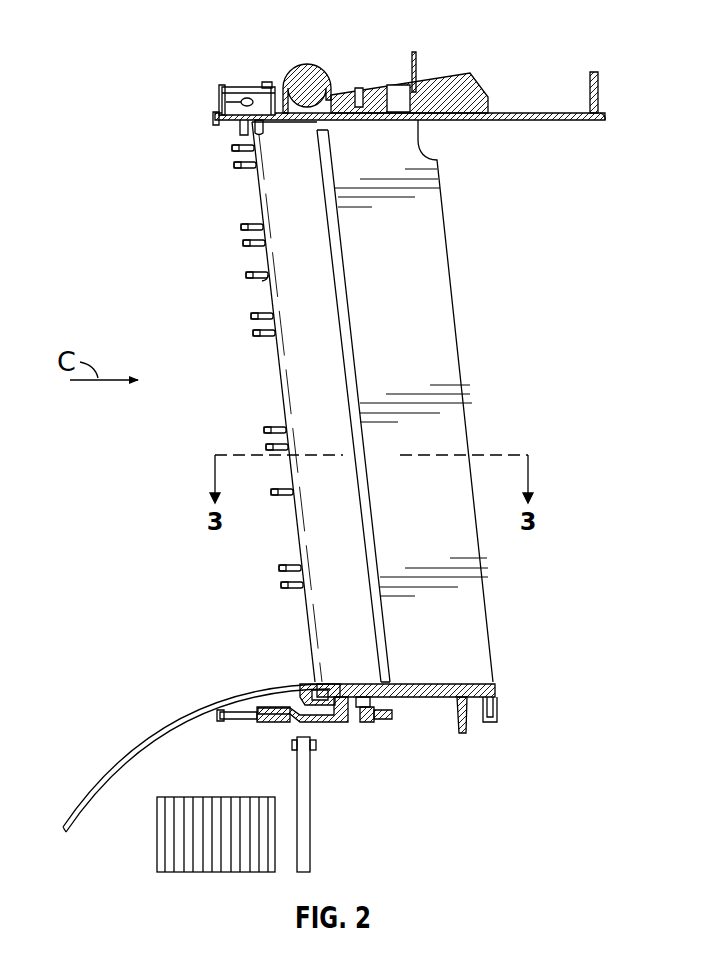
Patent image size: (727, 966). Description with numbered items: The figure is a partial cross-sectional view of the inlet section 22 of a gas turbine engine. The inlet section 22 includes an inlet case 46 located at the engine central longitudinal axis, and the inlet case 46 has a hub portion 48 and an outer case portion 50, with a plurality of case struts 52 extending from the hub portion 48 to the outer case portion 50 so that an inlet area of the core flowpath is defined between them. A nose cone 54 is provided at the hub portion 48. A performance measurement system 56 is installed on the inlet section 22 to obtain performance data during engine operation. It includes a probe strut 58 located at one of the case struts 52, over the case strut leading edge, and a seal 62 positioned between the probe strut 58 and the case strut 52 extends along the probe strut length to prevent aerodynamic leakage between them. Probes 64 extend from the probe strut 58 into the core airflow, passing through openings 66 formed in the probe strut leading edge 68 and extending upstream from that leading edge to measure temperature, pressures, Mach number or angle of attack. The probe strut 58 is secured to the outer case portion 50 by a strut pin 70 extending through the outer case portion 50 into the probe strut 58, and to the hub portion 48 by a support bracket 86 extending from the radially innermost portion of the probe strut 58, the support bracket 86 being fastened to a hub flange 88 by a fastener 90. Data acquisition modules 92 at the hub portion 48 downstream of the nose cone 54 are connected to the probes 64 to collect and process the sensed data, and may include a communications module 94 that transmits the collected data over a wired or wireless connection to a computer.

The inlet section 22 is at (178, 78).
The inlet case 46 is at (460, 116).
The hub portion 48 is at (463, 734).
The outer case portion 50 is at (345, 95).
The case strut 52 is at (447, 360).
The nose cone 54 is at (150, 745).
The performance measurement system 56 is at (196, 328).
The probe strut 58 is at (295, 384).
The seal 62 is at (348, 292).
The probe 64 is at (232, 148).
The opening 66 is at (262, 281).
The probe strut leading edge 68 is at (278, 372).
The strut pin 70 is at (250, 98).
The support bracket 86 is at (318, 688).
The hub flange 88 is at (366, 724).
The fastener 90 is at (388, 722).
The data acquisition module 92 is at (200, 822).
The communications module 94 is at (270, 842).